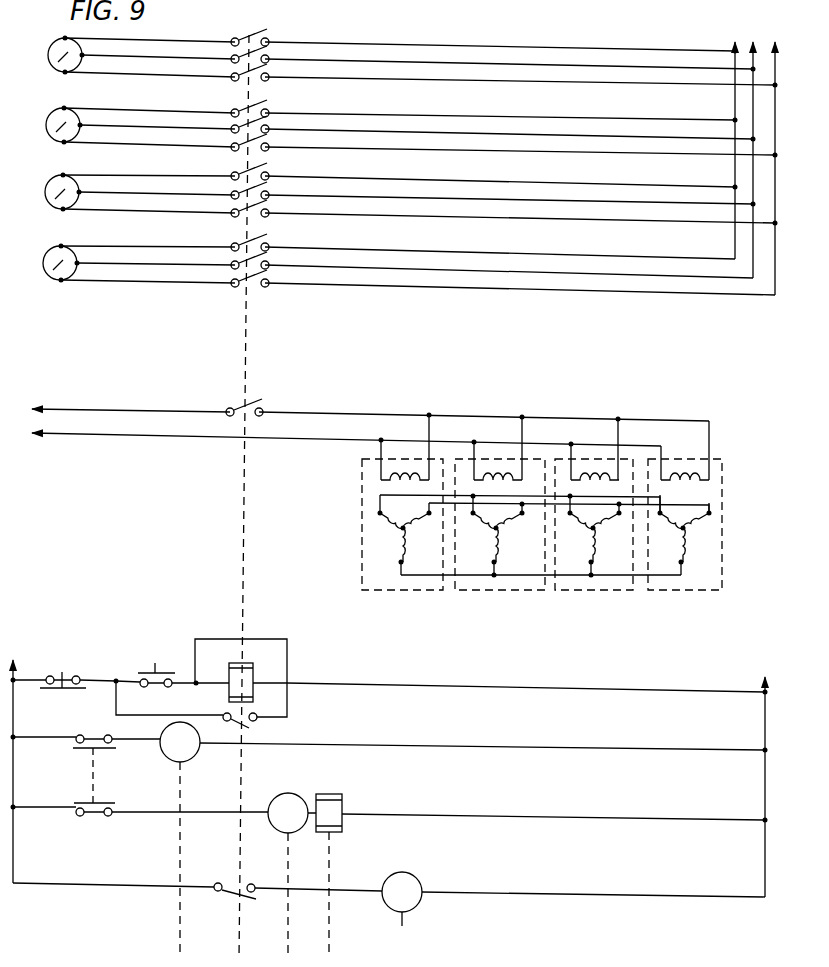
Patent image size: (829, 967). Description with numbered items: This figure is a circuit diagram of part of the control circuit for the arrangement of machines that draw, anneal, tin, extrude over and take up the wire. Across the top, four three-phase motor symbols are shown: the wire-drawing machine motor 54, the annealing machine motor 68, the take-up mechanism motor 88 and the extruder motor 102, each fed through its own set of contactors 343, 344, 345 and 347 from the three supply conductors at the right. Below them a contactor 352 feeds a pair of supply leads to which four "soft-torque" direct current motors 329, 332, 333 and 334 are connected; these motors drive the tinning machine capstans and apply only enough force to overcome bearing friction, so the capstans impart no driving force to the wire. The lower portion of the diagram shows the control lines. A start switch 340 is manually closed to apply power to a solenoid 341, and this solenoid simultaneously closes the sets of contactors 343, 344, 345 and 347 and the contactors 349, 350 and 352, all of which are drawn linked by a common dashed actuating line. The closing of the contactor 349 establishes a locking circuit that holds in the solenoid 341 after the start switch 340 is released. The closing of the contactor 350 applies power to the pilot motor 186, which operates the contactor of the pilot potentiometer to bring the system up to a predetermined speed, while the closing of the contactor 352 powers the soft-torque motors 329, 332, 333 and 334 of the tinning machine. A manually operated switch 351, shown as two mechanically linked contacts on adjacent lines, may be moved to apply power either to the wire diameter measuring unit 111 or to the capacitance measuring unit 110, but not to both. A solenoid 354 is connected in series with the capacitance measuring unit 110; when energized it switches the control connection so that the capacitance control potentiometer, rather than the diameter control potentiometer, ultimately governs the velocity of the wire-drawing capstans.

The wire-drawing machine motor 54 is at (56, 67).
The annealing machine motor 68 is at (54, 136).
The take-up mechanism motor 88 is at (53, 203).
The extruder motor 102 is at (51, 274).
The set of contactors 343 is at (267, 29).
The set of contactors 344 is at (267, 100).
The set of contactors 345 is at (267, 163).
The set of contactors 347 is at (267, 234).
The contactor 352 is at (262, 399).
The soft-torque direct current motor 329 is at (420, 589).
The soft-torque direct current motor 332 is at (518, 591).
The soft-torque direct current motor 333 is at (610, 591).
The soft-torque direct current motor 334 is at (696, 593).
The start switch 340 is at (151, 664).
The solenoid 341 is at (242, 677).
The contactor 349 is at (249, 728).
The manually operated switch 351 is at (93, 781).
The wire diameter measuring unit 111 is at (194, 751).
The capacitance measuring unit 110 is at (287, 805).
The solenoid 354 is at (335, 810).
The contactor 350 is at (240, 897).
The pilot motor 186 is at (413, 887).